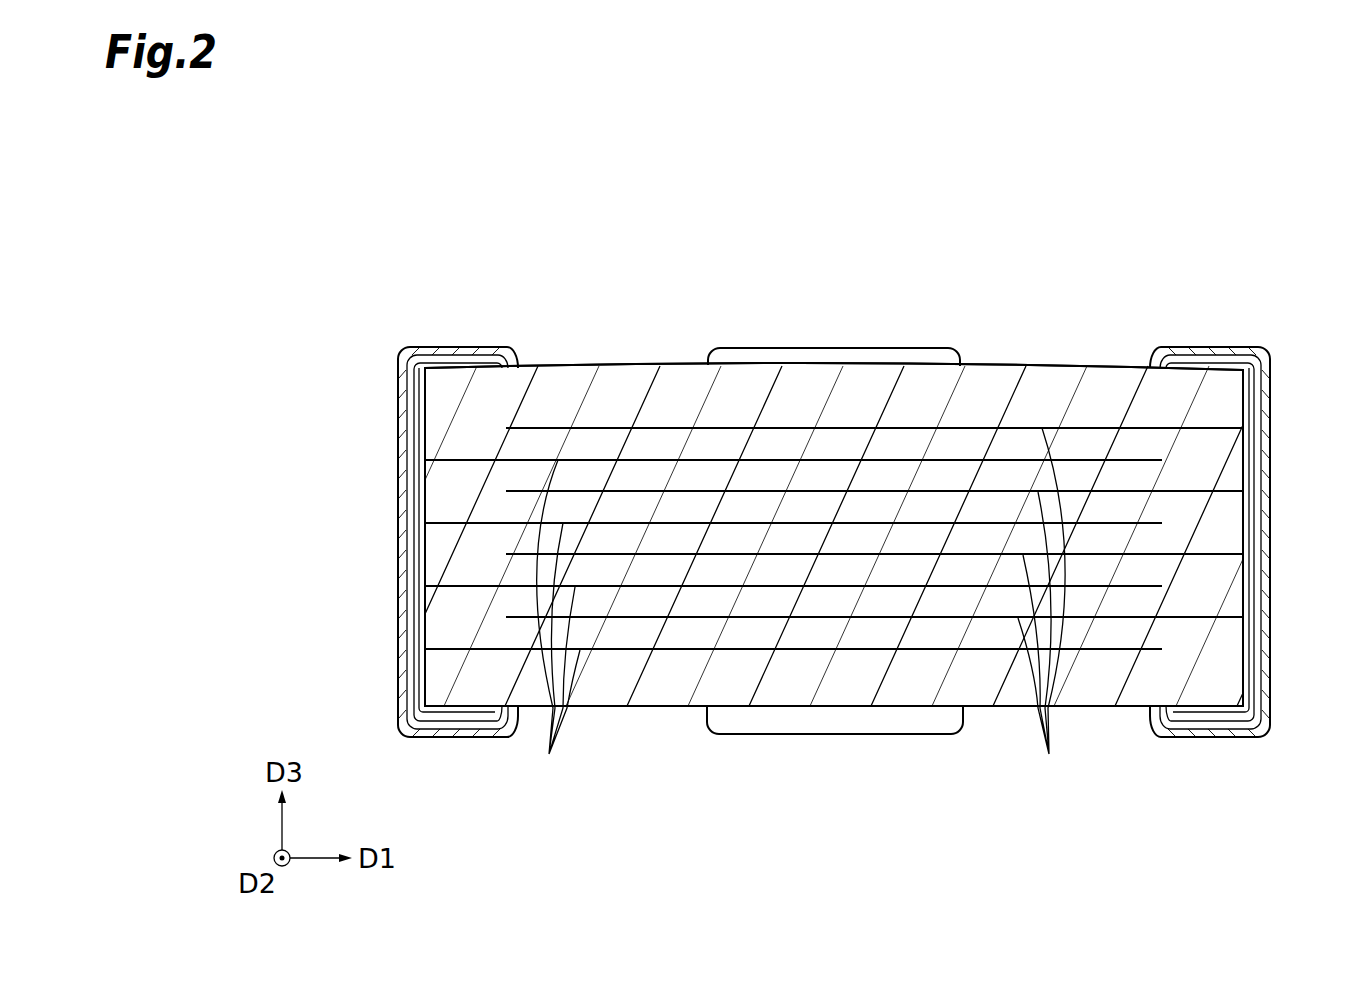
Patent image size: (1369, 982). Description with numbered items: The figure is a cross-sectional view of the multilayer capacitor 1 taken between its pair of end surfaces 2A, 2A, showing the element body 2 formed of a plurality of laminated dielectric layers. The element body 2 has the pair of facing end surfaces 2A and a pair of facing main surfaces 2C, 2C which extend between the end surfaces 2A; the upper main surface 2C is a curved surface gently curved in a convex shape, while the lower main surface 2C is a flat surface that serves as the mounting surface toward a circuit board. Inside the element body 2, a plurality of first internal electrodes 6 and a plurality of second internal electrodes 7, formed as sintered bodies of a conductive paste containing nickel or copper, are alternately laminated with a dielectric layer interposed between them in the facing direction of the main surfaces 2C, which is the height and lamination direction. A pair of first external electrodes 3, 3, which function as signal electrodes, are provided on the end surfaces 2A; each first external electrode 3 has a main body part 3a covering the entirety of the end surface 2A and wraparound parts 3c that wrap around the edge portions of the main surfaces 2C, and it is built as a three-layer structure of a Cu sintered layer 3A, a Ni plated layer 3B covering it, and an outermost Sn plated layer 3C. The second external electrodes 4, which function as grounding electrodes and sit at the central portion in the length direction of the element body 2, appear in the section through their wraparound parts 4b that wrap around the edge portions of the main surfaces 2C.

The multilayer capacitor 1 is at (396, 228).
The element body 2 is at (582, 362).
The end surface 2A is at (425, 675).
The main surface 2C is at (638, 366).
The first external electrode 3 is at (375, 488).
The main body part 3a is at (406, 425).
The wraparound part 3c is at (468, 348).
The Cu sintered layer 3A is at (414, 526).
The Ni plated layer 3B is at (408, 565).
The Sn plated layer 3C is at (402, 592).
The second external electrode 4 is at (772, 338).
The wraparound part 4b is at (862, 354).
The first internal electrode 6 is at (558, 623).
The second internal electrode 7 is at (1041, 607).